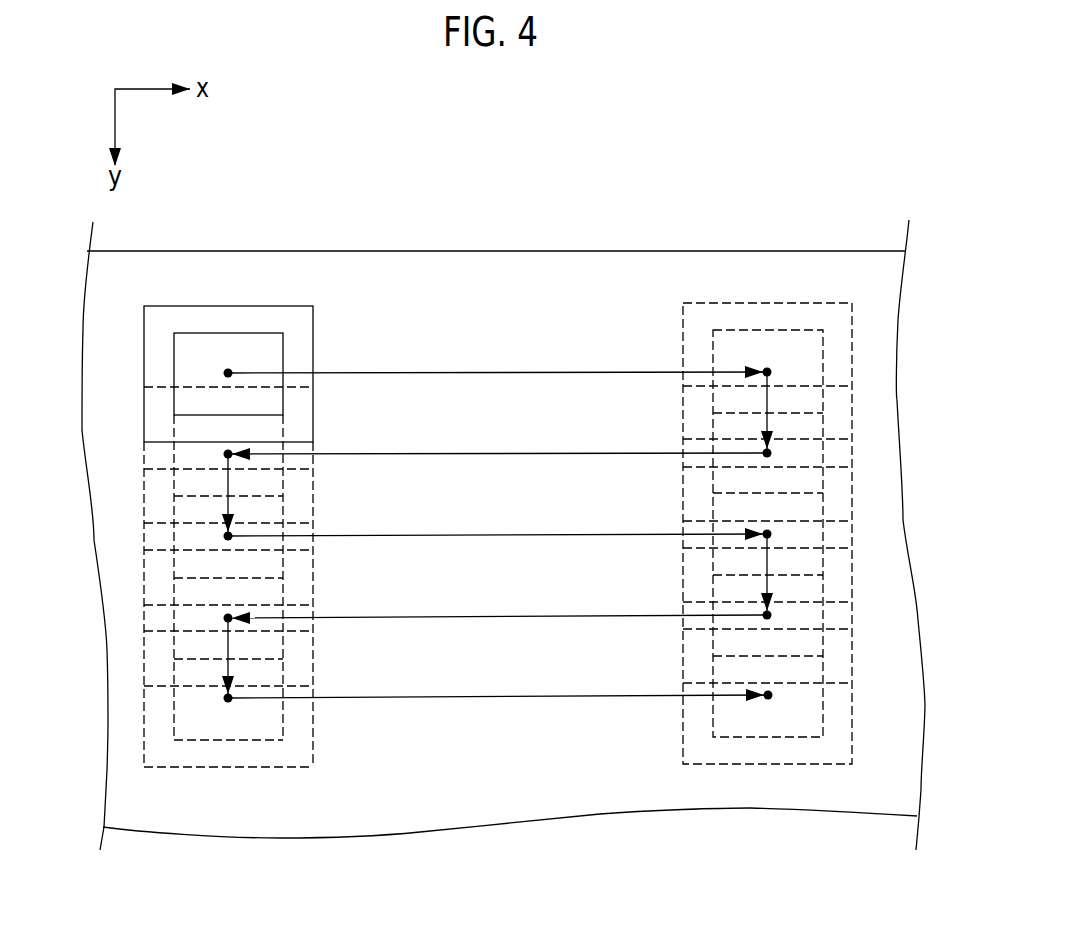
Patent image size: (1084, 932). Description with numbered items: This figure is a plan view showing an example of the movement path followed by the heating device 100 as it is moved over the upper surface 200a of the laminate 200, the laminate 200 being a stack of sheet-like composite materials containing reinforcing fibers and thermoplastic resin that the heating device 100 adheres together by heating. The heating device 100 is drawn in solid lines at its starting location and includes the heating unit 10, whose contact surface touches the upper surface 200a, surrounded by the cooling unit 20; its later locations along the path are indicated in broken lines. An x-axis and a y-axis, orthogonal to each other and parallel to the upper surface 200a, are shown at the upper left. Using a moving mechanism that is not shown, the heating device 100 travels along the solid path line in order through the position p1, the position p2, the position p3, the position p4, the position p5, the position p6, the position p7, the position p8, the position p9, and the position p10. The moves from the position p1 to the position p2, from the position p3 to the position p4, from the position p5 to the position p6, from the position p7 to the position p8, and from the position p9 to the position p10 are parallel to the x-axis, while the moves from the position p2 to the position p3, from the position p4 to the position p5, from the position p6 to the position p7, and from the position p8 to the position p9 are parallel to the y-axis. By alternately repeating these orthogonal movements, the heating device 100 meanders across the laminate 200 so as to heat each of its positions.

The heating device 100 is at (228, 327).
The cooling unit 20 is at (293, 305).
The heating unit 10 is at (242, 333).
The laminate 200 is at (608, 250).
The upper surface of the laminate 200a is at (410, 264).
The position p1 is at (228, 373).
The position p2 is at (767, 372).
The position p3 is at (767, 453).
The position p4 is at (228, 454).
The position p5 is at (228, 536).
The position p6 is at (767, 534).
The position p7 is at (767, 615).
The position p8 is at (228, 618).
The position p9 is at (229, 698).
The position p10 is at (768, 695).